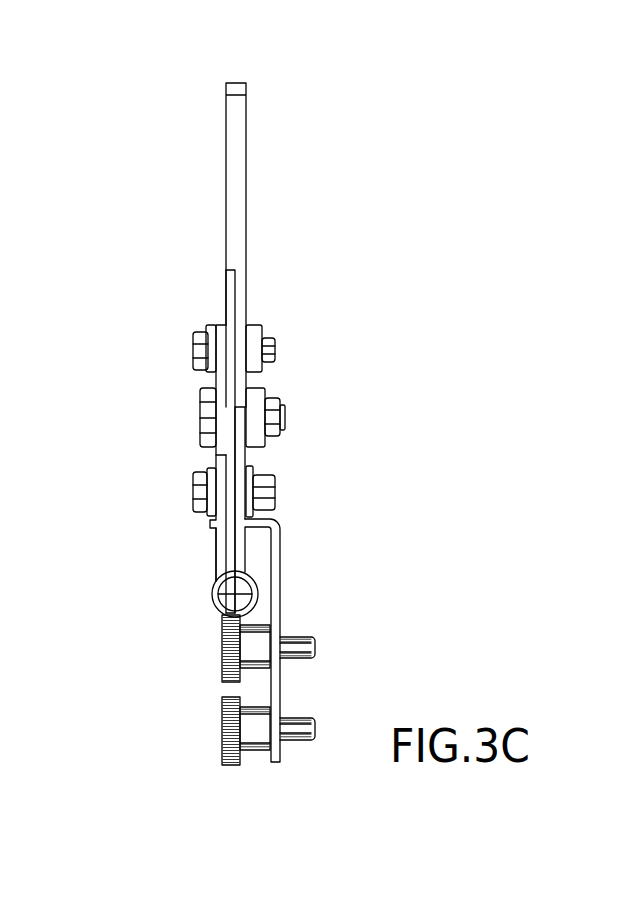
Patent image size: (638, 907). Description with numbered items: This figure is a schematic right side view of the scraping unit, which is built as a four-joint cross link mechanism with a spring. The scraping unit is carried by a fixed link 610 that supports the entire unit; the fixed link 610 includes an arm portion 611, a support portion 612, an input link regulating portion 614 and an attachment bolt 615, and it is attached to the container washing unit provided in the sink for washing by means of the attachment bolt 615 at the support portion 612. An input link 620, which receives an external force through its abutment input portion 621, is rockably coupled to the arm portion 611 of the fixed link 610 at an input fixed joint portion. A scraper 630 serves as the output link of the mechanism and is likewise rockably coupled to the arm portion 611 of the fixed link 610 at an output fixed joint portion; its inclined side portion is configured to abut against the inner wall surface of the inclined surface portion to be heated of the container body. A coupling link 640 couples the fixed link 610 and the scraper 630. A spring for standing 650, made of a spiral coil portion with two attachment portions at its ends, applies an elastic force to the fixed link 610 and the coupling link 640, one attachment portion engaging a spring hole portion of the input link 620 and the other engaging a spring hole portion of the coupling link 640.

The fixed link 610 is at (309, 584).
The arm portion 611 is at (251, 460).
The support portion 612 is at (281, 540).
The input link regulating portion 614 is at (213, 526).
The attachment bolt 615 is at (250, 731).
The input link 620 is at (216, 462).
The abutment input portion 621 is at (229, 292).
The scraper 630 is at (226, 160).
The coupling link 640 is at (214, 578).
The spring for standing 650 is at (258, 600).